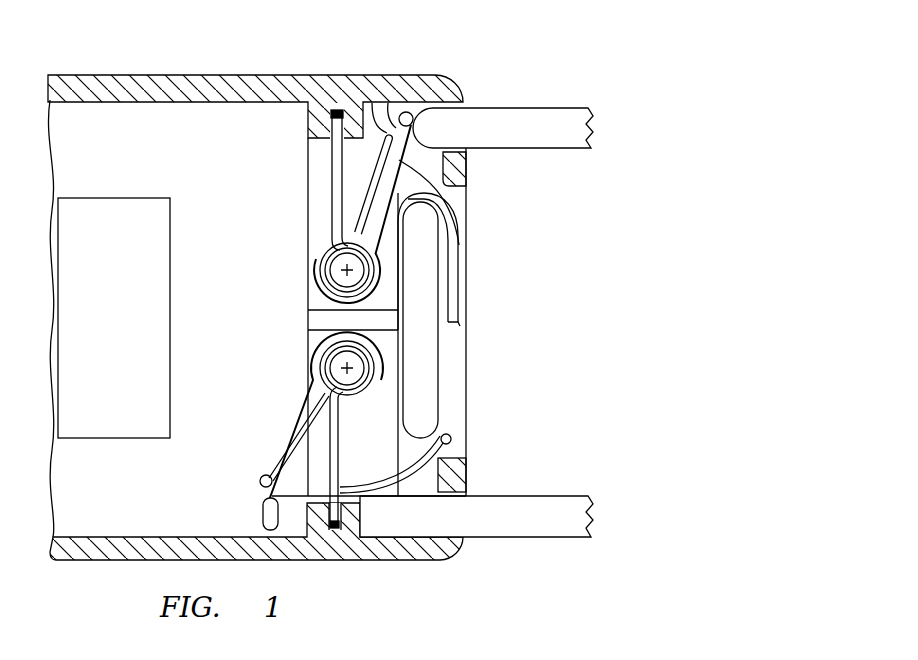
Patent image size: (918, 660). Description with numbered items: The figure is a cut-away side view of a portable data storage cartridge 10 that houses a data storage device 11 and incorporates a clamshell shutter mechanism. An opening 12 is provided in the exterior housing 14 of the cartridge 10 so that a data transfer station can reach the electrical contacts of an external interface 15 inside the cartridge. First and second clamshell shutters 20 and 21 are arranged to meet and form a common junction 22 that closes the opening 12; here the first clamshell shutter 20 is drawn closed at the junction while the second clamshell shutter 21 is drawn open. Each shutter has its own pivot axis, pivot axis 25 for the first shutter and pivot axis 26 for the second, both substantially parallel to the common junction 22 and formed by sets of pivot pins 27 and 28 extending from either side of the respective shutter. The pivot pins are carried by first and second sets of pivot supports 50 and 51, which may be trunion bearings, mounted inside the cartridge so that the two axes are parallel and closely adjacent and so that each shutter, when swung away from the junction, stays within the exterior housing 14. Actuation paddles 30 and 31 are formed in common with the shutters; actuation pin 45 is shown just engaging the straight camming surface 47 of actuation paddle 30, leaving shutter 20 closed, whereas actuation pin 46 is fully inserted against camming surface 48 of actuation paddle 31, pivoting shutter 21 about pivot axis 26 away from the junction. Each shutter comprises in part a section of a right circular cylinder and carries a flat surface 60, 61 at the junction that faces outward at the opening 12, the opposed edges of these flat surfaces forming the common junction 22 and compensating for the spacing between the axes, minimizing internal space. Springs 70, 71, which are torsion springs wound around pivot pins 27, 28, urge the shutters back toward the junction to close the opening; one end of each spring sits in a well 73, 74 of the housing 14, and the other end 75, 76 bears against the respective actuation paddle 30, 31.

The portable data storage cartridge 10 is at (148, 58).
The data storage device 11 is at (118, 198).
The opening 12 is at (468, 190).
The exterior housing 14 is at (240, 75).
The external interface 15 is at (438, 360).
The first clamshell shutter 20 is at (466, 216).
The second clamshell shutter 21 is at (452, 438).
The common junction 22 is at (462, 326).
The pivot axis 25 is at (345, 270).
The pivot axis 26 is at (343, 368).
The pivot pins 27 is at (330, 286).
The pivot pins 28 is at (328, 352).
The actuation paddle 30 is at (406, 103).
The actuation paddle 31 is at (262, 498).
The actuation pin 45 is at (540, 108).
The actuation pin 46 is at (540, 537).
The camming surface 47 is at (415, 121).
The camming surface 48 is at (263, 519).
The pivot supports 50 is at (308, 166).
The pivot supports 51 is at (308, 398).
The flat surface 60 is at (460, 287).
The flat surface 61 is at (420, 497).
The spring 70 is at (378, 196).
The spring 71 is at (298, 440).
The well 73 is at (330, 114).
The well 74 is at (333, 540).
The spring end 75 is at (392, 103).
The spring end 76 is at (261, 480).